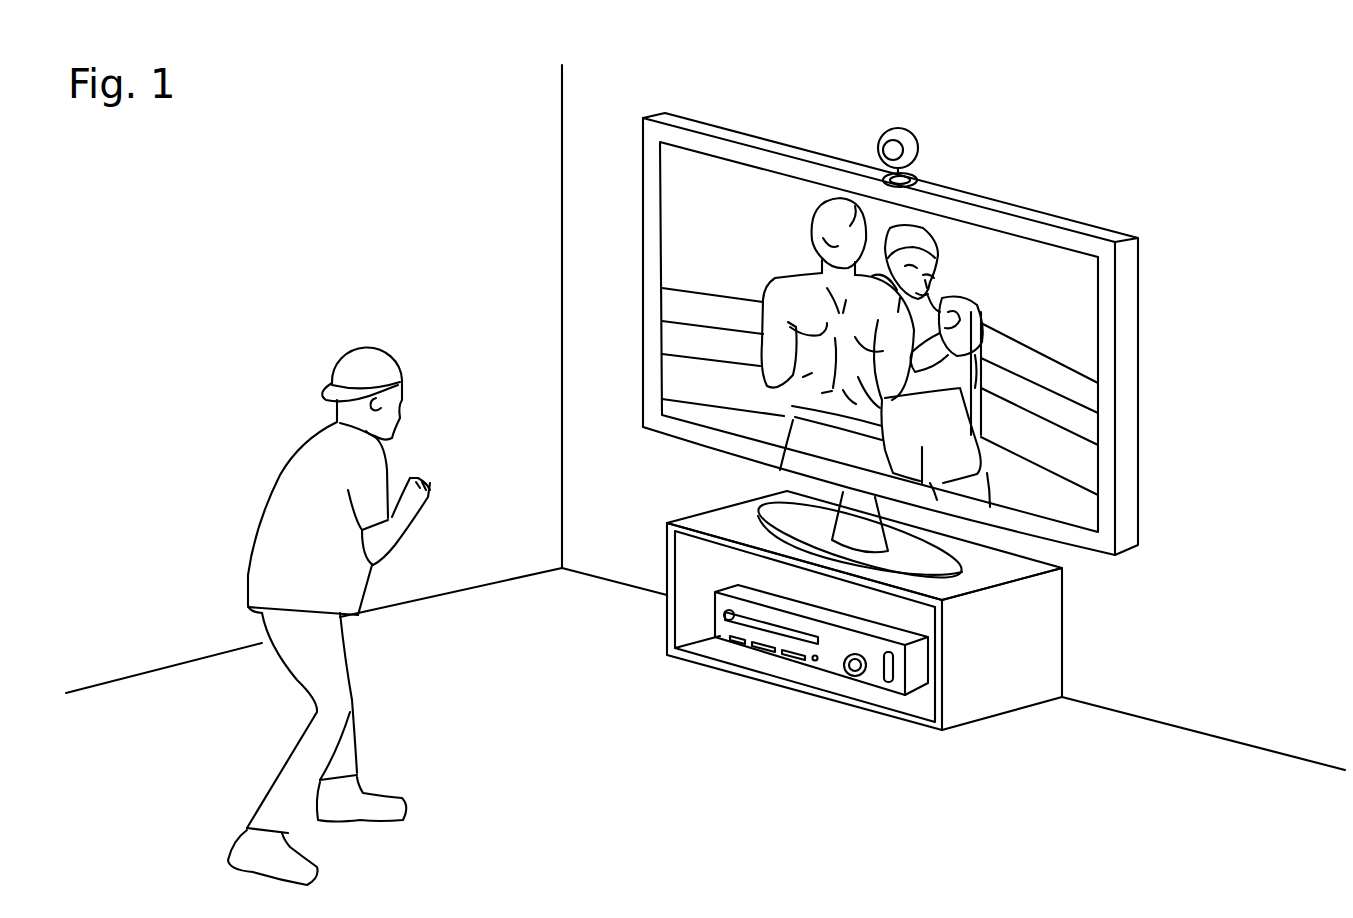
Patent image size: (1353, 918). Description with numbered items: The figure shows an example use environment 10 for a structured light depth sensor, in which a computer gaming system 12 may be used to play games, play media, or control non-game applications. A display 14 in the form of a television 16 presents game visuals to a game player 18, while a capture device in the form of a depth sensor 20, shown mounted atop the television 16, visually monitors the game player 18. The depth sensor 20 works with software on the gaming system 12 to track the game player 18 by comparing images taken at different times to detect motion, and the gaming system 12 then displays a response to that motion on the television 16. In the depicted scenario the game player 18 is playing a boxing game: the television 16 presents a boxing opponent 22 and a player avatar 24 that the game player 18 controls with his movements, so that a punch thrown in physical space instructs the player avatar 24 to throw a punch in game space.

The interactive system 10 is at (996, 100).
The computer gaming system 12 is at (824, 677).
The display 14 is at (1098, 463).
The television 16 is at (1140, 332).
The game player 18 is at (354, 728).
The depth sensor 20 is at (918, 150).
The boxing opponent 22 is at (937, 272).
The player avatar 24 is at (766, 287).